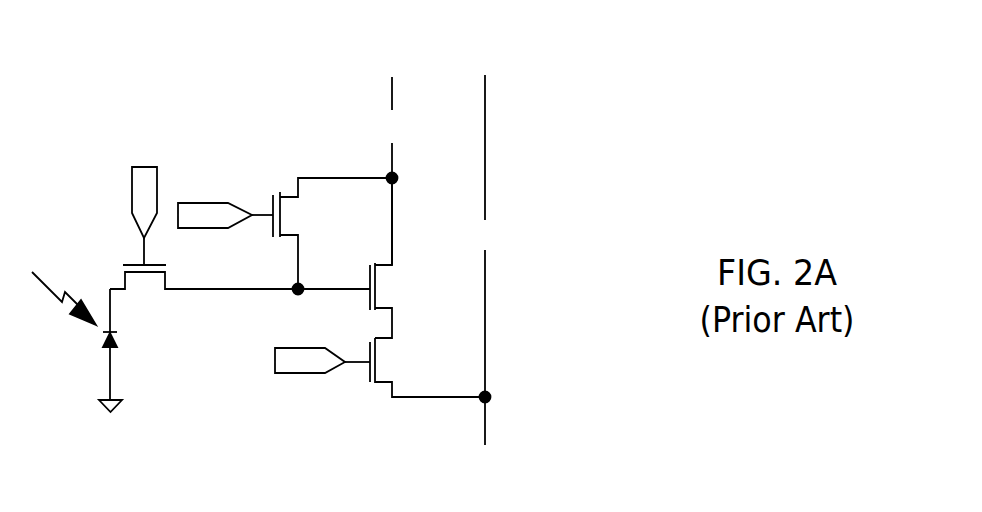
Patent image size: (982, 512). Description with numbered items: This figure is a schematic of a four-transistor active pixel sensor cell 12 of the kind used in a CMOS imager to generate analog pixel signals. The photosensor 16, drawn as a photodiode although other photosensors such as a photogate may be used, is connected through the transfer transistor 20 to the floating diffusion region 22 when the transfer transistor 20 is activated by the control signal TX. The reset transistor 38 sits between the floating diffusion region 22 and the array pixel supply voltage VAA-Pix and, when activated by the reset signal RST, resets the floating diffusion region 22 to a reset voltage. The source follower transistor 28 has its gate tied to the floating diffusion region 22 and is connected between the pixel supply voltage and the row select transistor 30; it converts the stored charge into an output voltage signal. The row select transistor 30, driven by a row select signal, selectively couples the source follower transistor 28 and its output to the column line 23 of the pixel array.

The APS pixel cell 12 is at (180, 105).
The photosensor 16 is at (135, 375).
The transfer transistor 20 is at (110, 252).
The floating diffusion region 22 is at (290, 300).
The column line 23 is at (507, 175).
The source follower transistor 28 is at (392, 285).
The row select transistor 30 is at (397, 372).
The reset transistor 38 is at (275, 172).